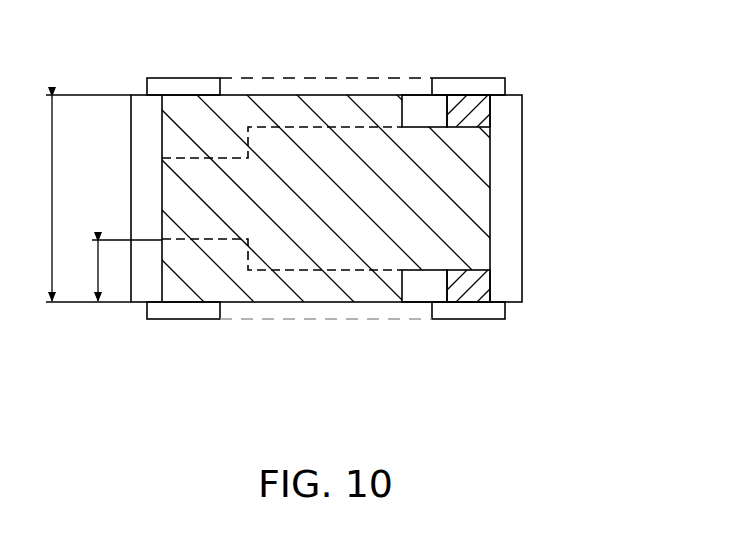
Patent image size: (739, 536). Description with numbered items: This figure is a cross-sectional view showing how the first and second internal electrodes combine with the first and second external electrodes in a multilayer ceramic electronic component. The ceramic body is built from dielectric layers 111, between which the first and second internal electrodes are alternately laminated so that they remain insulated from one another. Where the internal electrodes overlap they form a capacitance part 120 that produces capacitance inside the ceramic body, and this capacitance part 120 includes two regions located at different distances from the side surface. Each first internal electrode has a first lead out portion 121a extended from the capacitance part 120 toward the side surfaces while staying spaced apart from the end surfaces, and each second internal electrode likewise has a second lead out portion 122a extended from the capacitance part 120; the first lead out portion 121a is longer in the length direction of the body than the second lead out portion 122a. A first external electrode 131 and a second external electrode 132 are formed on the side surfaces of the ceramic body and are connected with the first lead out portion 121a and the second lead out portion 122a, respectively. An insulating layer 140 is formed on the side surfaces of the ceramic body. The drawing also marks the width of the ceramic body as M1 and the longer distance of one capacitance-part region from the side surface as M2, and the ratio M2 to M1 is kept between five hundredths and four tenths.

The dielectric layer 111 is at (502, 117).
The capacitance part 120 is at (490, 207).
The first lead out portion 121a is at (182, 273).
The second lead out portion 122a is at (475, 285).
The first external electrode 131 is at (182, 88).
The second external electrode 132 is at (465, 88).
The insulating layer 140 is at (300, 88).
The width of the ceramic body M1 is at (76, 198).
The distance of capacitance part region from side surface M2 is at (114, 270).